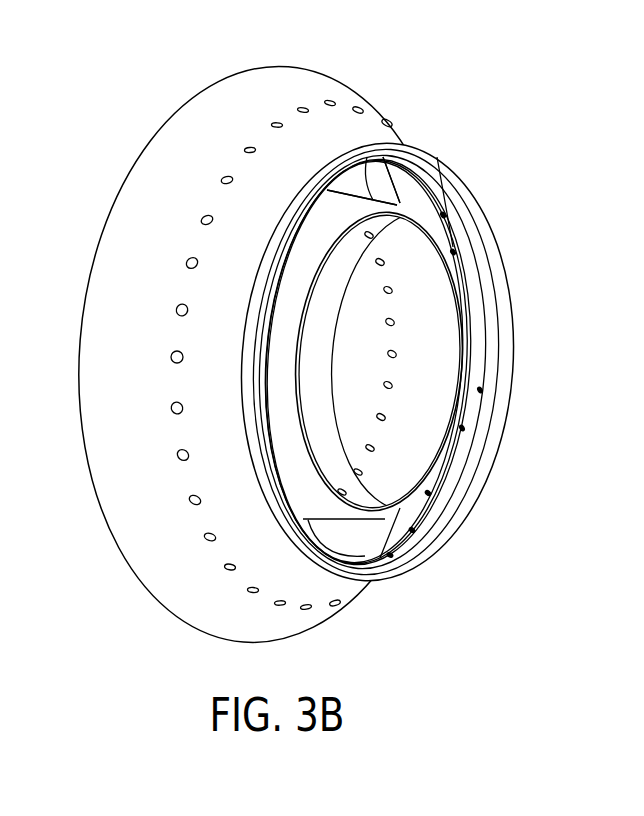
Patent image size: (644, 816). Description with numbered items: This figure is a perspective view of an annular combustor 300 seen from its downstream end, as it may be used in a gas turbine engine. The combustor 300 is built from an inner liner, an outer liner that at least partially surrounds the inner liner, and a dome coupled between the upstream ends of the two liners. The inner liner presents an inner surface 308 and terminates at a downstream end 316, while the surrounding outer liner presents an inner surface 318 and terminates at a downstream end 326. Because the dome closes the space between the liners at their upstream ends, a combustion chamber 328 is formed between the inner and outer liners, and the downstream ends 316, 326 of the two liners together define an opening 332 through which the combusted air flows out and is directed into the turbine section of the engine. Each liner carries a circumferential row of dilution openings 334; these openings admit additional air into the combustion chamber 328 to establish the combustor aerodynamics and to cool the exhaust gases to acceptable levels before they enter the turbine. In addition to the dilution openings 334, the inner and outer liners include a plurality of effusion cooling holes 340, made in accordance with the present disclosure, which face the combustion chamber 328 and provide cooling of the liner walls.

The combustor 300 is at (342, 354).
The inner surface 308 is at (278, 345).
The downstream end 316 is at (468, 338).
The inner surface 318 is at (462, 445).
The downstream end 326 is at (505, 363).
The combustion chamber 328 is at (407, 184).
The opening 332 is at (450, 480).
The dilution openings 334 is at (227, 178).
The effusion cooling holes 340 is at (318, 228).